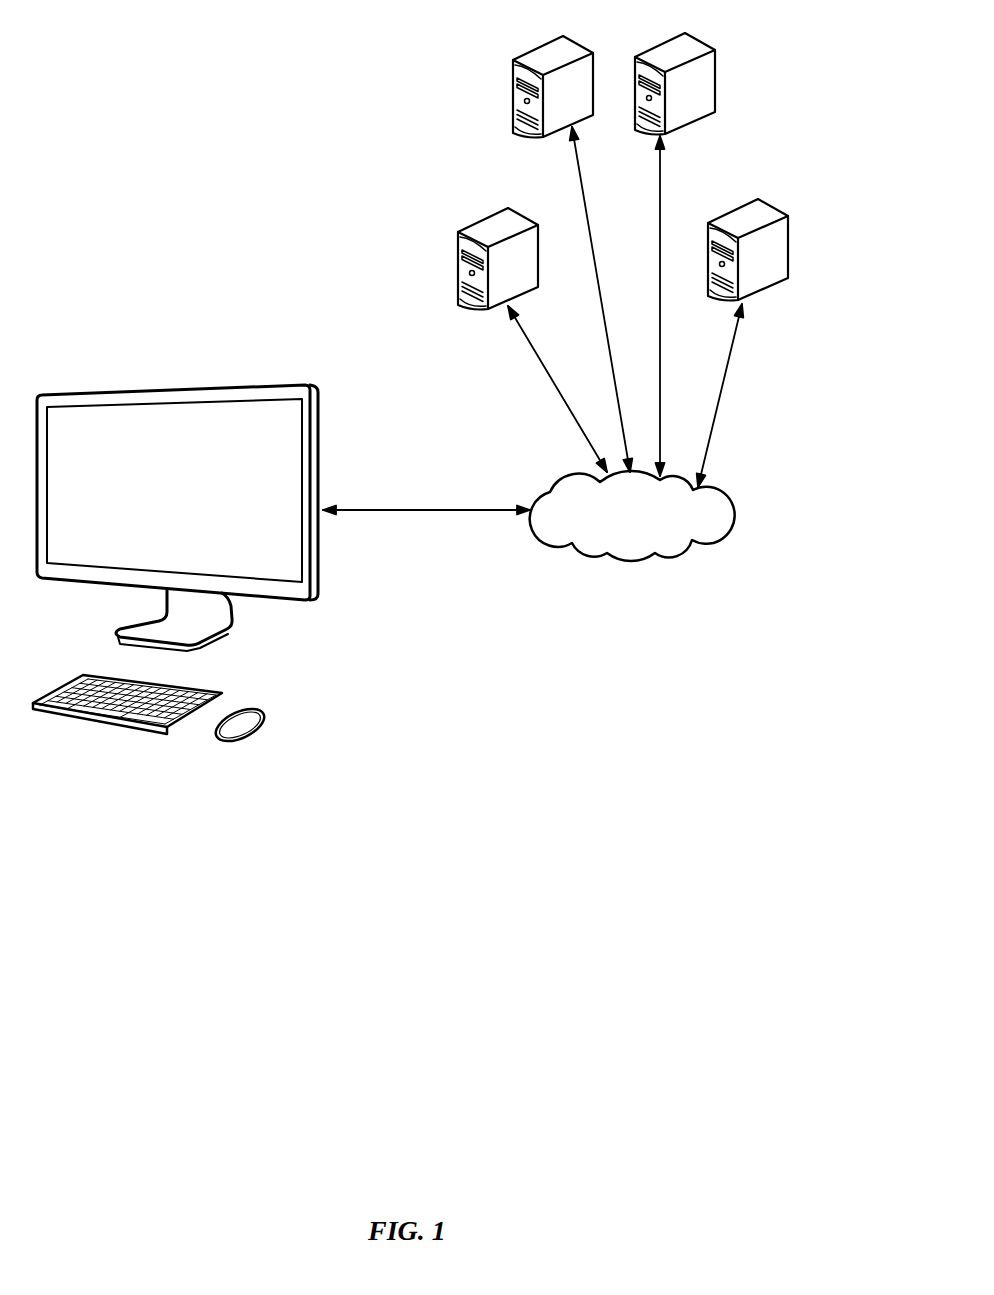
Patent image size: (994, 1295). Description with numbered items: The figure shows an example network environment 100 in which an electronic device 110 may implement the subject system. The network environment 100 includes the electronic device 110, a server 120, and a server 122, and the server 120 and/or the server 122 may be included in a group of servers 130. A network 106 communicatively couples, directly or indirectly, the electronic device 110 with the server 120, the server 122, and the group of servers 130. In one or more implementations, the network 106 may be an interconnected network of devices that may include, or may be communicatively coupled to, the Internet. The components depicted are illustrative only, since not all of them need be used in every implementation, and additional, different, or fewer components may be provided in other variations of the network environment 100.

The network environment 100 is at (58, 132).
The network 106 is at (548, 492).
The electronic device 110 is at (165, 770).
The server 120 is at (470, 222).
The server 122 is at (758, 200).
The group of servers 130 is at (420, 52).